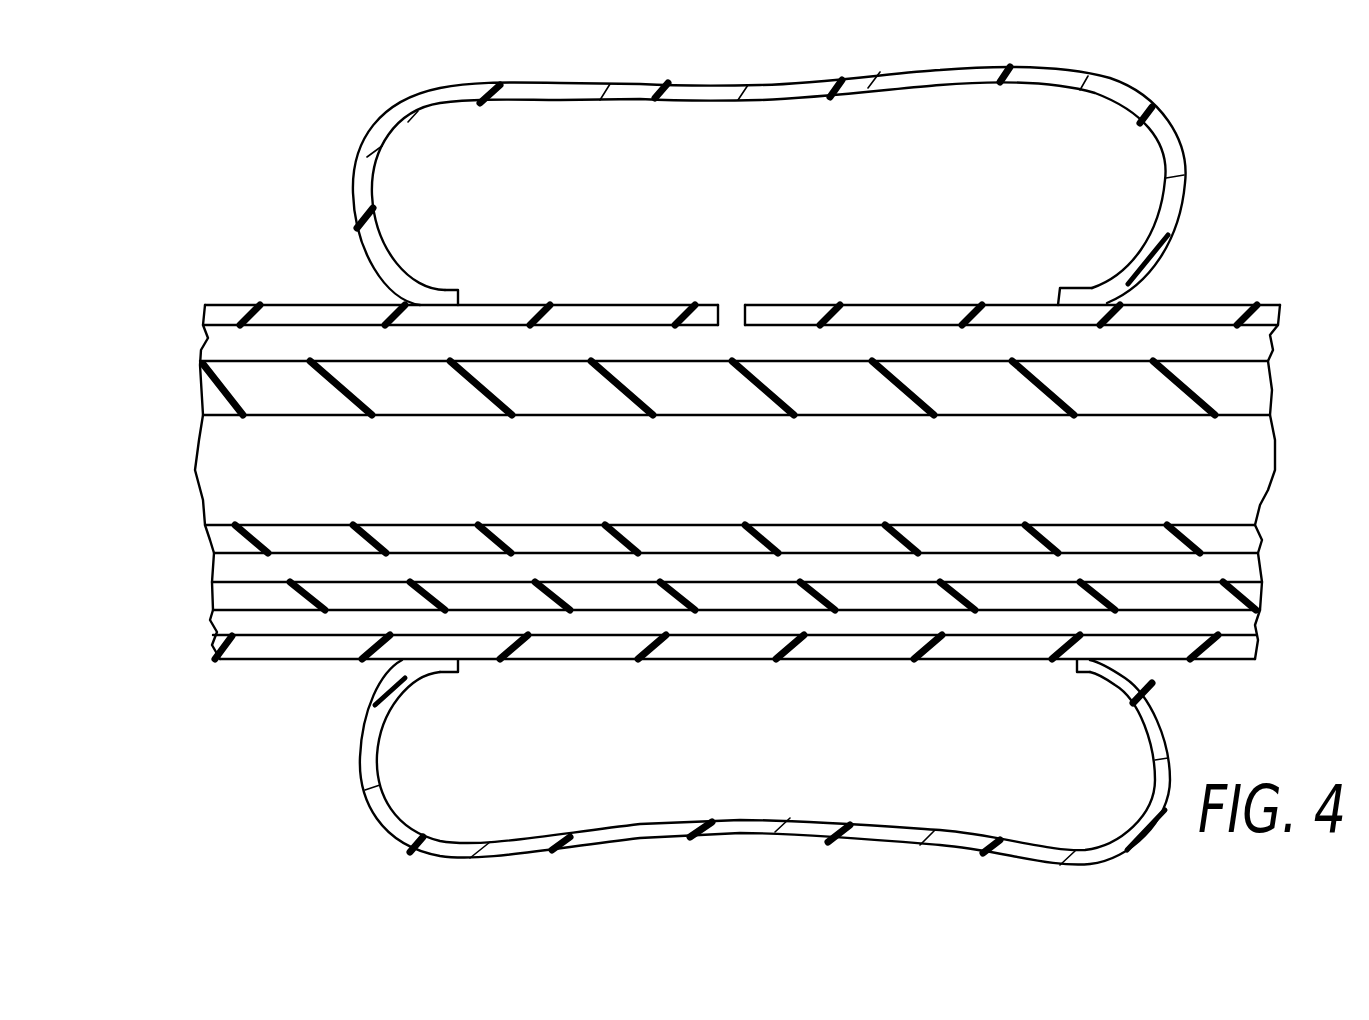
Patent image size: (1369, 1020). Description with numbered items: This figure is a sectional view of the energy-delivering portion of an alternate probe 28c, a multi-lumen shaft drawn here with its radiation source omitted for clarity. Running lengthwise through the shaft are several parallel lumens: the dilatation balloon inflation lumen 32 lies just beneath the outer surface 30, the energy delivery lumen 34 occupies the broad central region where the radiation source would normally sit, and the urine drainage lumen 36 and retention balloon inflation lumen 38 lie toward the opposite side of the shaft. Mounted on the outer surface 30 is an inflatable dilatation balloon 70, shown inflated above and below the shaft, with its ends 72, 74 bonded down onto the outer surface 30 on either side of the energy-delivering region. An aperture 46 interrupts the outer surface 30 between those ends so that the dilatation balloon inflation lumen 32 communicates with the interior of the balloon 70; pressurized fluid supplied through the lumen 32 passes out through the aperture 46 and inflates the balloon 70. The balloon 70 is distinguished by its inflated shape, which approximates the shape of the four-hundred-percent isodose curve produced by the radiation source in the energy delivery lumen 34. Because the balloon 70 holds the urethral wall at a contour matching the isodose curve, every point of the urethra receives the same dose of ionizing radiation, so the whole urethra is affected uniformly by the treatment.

The probe 28c is at (231, 305).
The outer surface 30 is at (302, 305).
The dilatation balloon inflation lumen 32 is at (223, 338).
The energy delivery lumen 34 is at (208, 474).
The urine drainage lumen 36 is at (224, 568).
The retention balloon inflation lumen 38 is at (253, 622).
The aperture 46 is at (729, 313).
The inflatable dilatation balloon 70 is at (762, 83).
The left loop end 72 is at (433, 290).
The right loop end 74 is at (1080, 288).